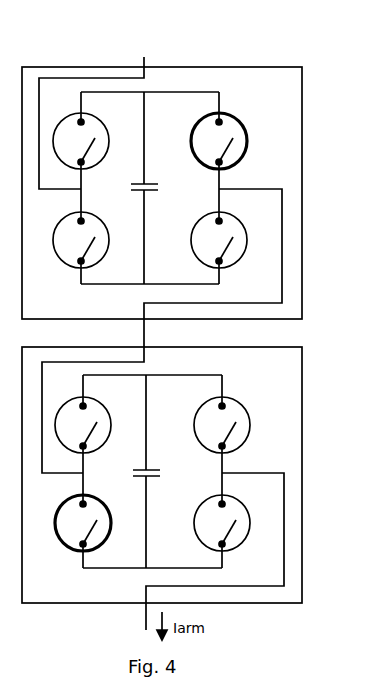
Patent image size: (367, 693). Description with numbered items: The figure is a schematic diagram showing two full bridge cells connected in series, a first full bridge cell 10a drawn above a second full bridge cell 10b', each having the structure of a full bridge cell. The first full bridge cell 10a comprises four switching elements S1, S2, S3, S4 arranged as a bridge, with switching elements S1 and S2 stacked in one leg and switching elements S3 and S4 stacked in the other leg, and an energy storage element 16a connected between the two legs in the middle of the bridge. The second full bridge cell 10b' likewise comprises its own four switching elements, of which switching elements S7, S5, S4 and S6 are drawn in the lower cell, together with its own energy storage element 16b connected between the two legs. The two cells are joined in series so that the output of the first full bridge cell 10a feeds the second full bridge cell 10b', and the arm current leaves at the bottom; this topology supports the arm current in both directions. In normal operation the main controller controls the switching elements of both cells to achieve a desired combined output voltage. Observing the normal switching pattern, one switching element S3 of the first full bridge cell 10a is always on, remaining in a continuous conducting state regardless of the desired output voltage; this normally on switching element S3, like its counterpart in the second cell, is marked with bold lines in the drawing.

The first full bridge cell 10a is at (302, 124).
The second full bridge cell 10b' is at (191, 475).
The switching element S1 is at (91, 115).
The switching element S2 is at (93, 215).
The normally on switching element S3 is at (244, 120).
The switching element S4 is at (262, 223).
The switching element S5 is at (246, 408).
The switching element S6 is at (236, 502).
The switching element S7 is at (106, 409).
The energy storage element 16a is at (153, 186).
The energy storage element 16b is at (155, 472).